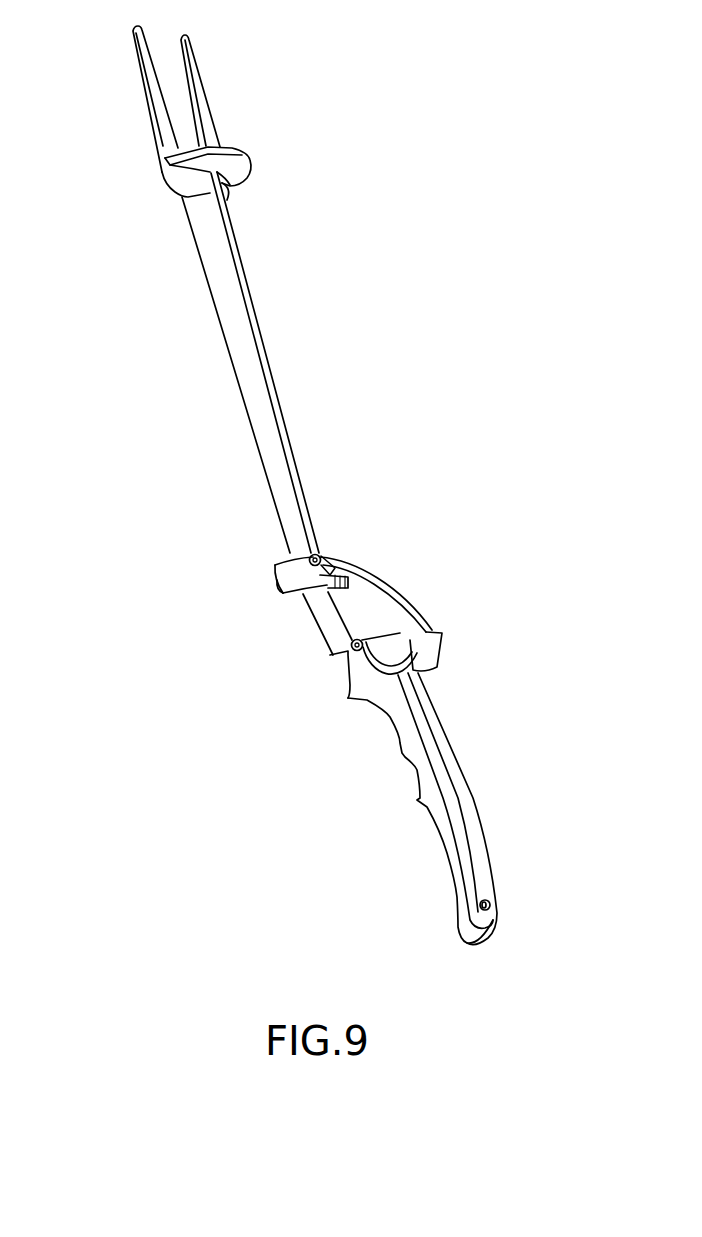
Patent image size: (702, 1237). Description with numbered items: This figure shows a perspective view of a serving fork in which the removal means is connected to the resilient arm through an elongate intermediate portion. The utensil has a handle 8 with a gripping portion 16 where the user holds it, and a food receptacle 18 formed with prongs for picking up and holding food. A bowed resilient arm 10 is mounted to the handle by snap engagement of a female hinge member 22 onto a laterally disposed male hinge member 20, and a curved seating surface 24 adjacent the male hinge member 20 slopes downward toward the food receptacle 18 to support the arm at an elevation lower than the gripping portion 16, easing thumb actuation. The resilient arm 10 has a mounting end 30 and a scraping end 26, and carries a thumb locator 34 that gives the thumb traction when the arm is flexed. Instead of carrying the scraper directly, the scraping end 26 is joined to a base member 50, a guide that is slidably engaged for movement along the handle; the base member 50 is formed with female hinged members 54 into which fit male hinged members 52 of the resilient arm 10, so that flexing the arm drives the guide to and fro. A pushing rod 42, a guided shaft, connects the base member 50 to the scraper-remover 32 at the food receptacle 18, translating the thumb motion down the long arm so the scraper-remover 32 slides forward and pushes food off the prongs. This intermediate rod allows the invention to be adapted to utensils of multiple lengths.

The handle 8 is at (380, 850).
The resilient arm 10 is at (452, 586).
The gripping portion 16 is at (418, 768).
The food receptacle 18 is at (153, 110).
The male hinge member 20 is at (330, 655).
The female hinge member 22 is at (347, 655).
The curved seating surface 24 is at (397, 673).
The scraping end 26 is at (330, 556).
The mounting end 30 is at (397, 620).
The scraper-remover 32 is at (252, 168).
The thumb locator 34 is at (436, 640).
The pushing rod 42 is at (247, 305).
The base member 50 is at (275, 582).
The male hinged member 52 is at (283, 572).
The female hinged member 54 is at (318, 552).